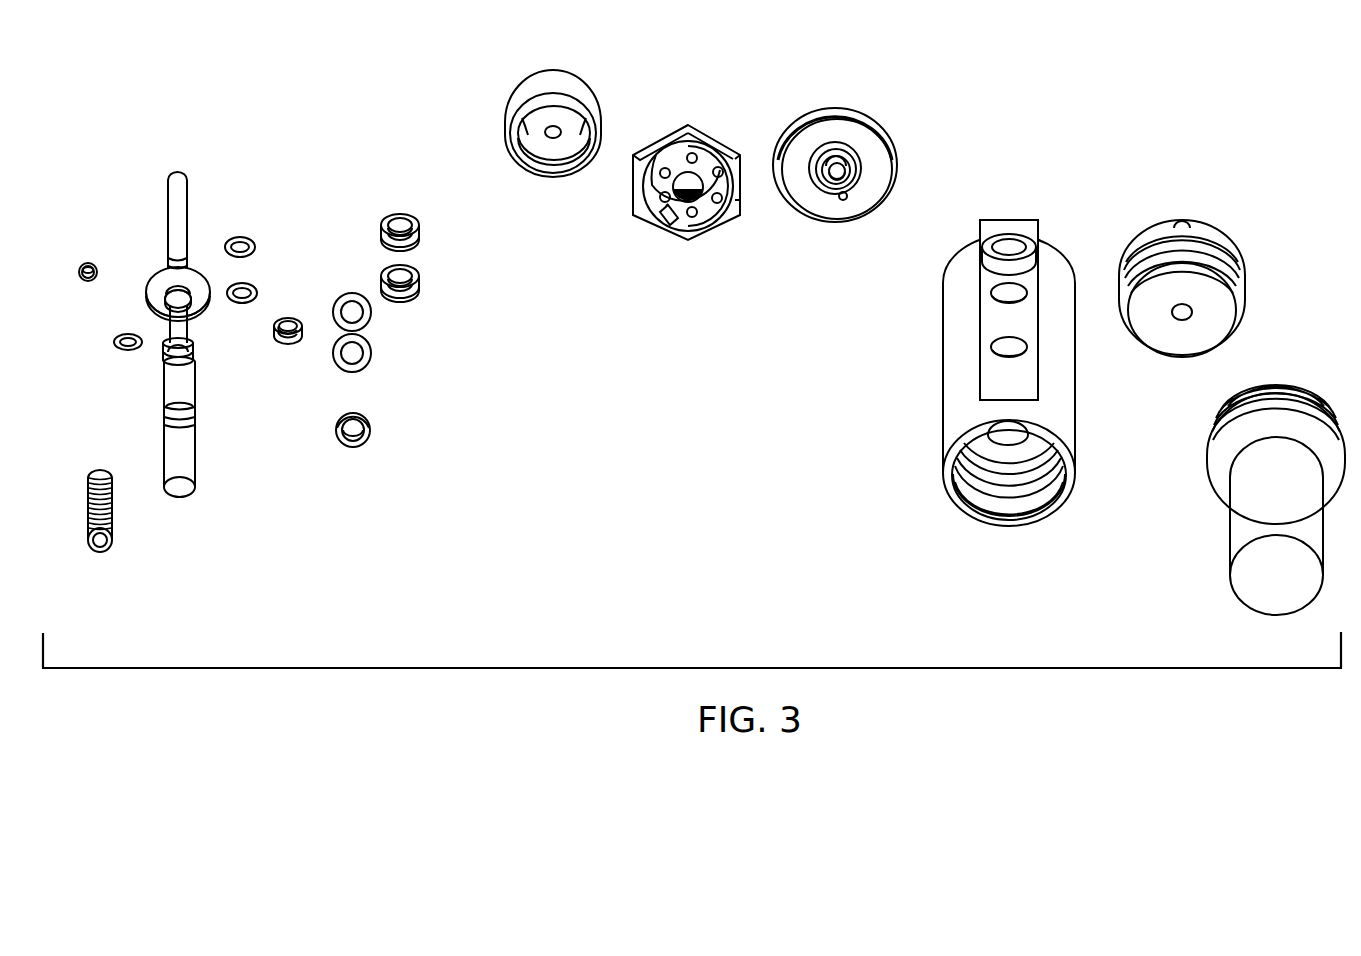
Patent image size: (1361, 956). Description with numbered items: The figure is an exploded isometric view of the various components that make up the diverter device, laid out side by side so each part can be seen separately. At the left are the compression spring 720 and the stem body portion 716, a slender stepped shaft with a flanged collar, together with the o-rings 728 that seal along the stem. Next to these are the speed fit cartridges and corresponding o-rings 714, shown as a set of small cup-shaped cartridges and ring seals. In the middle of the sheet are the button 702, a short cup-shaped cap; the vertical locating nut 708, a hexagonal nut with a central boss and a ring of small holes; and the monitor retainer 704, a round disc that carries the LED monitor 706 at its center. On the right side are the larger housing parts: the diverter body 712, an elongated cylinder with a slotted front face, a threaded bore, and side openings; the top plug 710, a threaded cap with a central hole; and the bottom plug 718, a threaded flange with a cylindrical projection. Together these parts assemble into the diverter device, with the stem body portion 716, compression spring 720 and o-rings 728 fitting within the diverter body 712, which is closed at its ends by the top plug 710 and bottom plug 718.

The button 702 is at (553, 63).
The monitor retainer 704 is at (840, 100).
The LED monitor 706 is at (815, 197).
The vertical locating nut 708 is at (673, 220).
The top plug 710 is at (1182, 212).
The diverter body 712 is at (1017, 210).
The speed fit cartridges and corresponding o-rings 714 is at (288, 320).
The stem body portion 716 is at (178, 165).
The bottom plug 718 is at (1282, 393).
The compression spring 720 is at (100, 552).
The o-rings 728 is at (128, 330).